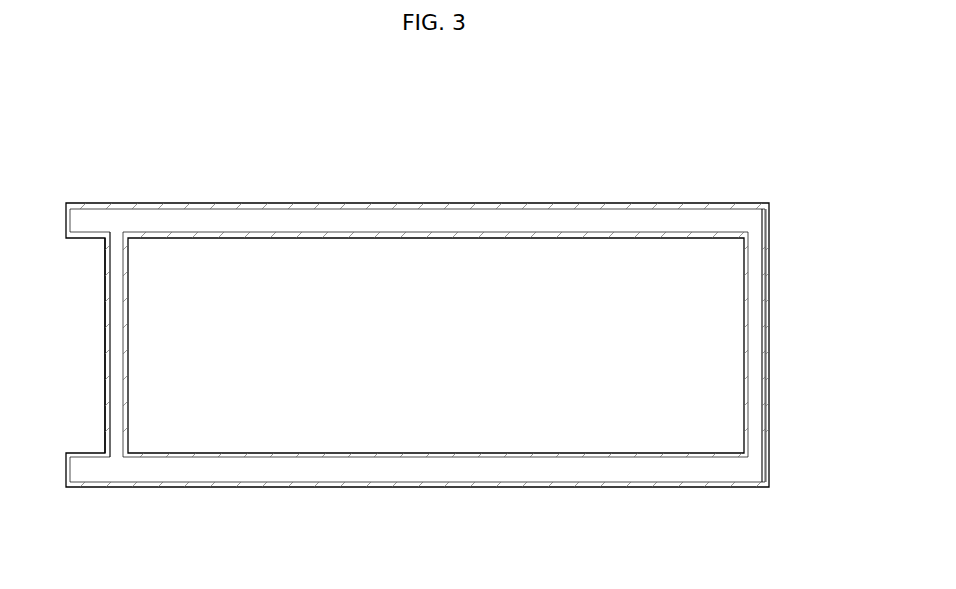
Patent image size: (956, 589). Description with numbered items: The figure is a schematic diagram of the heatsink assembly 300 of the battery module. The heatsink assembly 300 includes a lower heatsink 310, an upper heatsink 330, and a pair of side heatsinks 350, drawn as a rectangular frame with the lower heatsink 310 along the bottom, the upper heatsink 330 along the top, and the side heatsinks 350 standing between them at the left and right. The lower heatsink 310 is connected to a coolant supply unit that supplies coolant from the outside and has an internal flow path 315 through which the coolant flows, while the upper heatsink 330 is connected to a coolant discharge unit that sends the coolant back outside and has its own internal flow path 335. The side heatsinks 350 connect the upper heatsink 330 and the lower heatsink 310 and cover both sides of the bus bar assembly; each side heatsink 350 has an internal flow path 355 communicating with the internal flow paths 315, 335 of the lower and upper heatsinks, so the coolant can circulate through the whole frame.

The heatsink assembly 300 is at (283, 120).
The upper heatsink 330 is at (471, 203).
The internal flow path 335 is at (552, 222).
The lower heatsink 310 is at (472, 488).
The internal flow path 315 is at (552, 470).
The side heatsink 350 is at (105, 300).
The internal flow path 355 is at (118, 337).